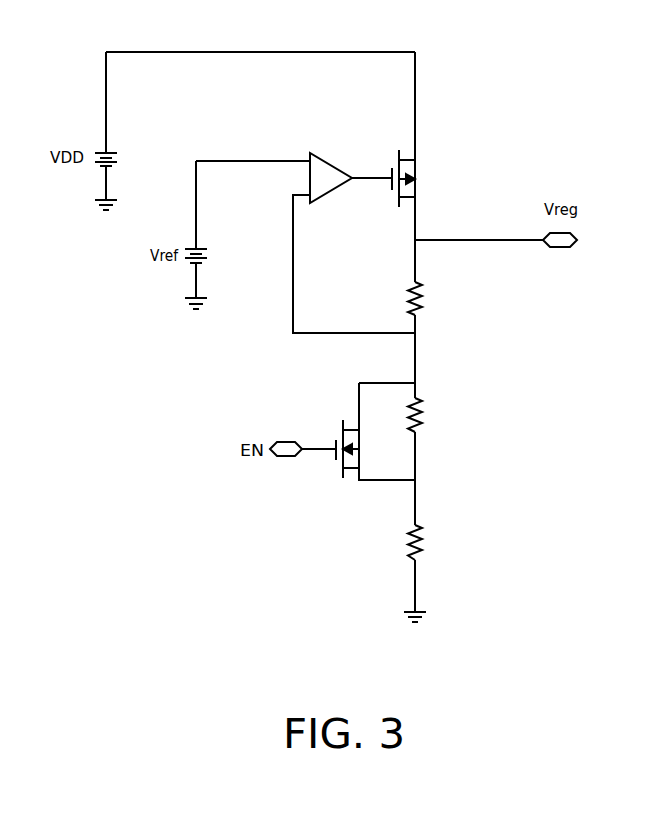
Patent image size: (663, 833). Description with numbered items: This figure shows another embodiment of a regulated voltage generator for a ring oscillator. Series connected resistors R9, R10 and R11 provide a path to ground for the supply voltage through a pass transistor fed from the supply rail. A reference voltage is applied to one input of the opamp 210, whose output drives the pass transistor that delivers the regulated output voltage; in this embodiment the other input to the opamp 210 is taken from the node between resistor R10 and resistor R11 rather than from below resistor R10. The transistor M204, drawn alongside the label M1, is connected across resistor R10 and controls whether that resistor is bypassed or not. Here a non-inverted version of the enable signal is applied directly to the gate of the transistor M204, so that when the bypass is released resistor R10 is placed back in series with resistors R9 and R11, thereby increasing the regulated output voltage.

The opamp 210 is at (329, 193).
The transistor M204 is at (342, 426).
The transistor M1 is at (319, 479).
The resistor R11 is at (439, 298).
The resistor R10 is at (439, 415).
The resistor R9 is at (435, 542).